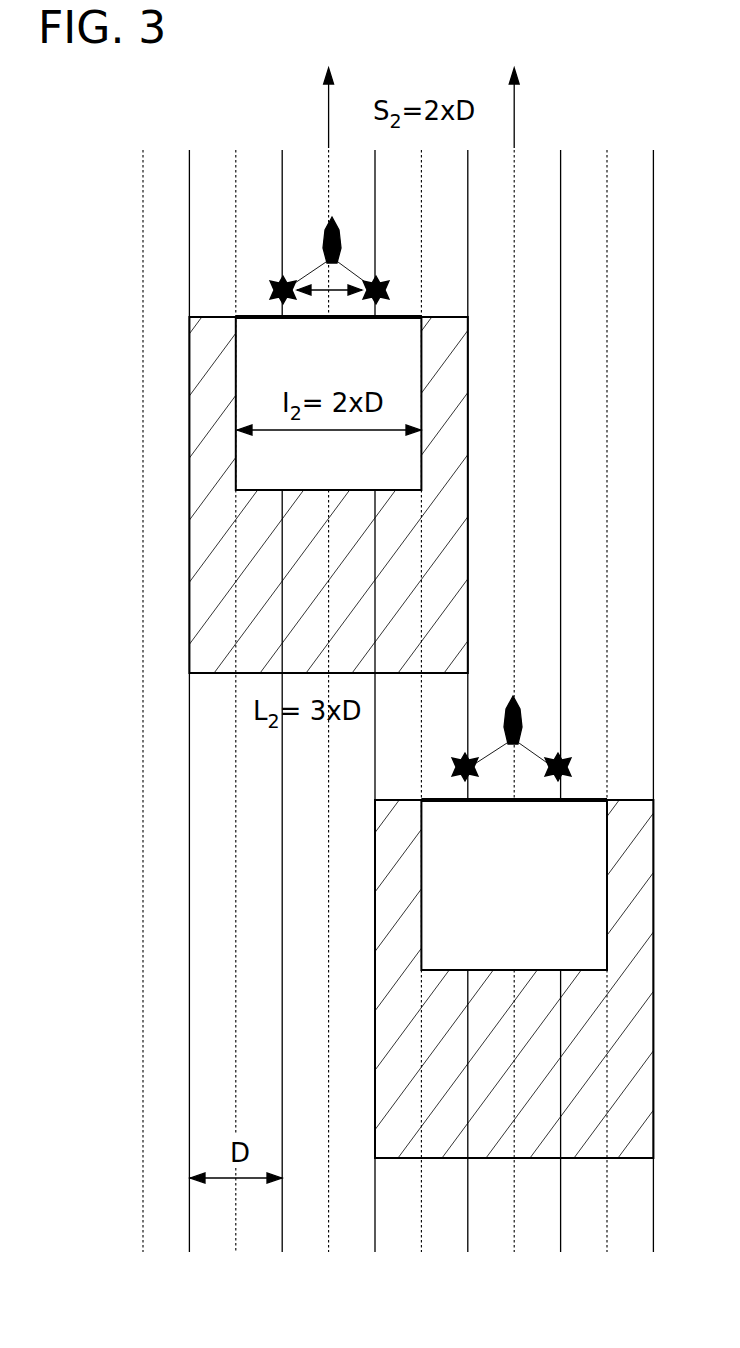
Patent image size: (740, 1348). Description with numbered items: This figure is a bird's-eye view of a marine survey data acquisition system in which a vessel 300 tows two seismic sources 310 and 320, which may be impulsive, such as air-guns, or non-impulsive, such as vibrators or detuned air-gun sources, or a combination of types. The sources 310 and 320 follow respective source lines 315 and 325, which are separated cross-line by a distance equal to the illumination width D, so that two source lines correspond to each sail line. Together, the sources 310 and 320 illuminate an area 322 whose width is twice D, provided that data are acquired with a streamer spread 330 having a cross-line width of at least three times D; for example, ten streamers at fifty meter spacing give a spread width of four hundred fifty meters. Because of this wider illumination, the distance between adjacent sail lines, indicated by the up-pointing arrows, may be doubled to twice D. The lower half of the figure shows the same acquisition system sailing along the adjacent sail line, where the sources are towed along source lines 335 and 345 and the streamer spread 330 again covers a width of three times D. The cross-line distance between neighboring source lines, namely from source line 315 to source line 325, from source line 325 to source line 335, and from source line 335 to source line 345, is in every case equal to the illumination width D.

The vessel 300 is at (341, 226).
The source 310 is at (279, 283).
The source 320 is at (379, 283).
The illuminated area 322 is at (368, 352).
The source line 325 is at (375, 748).
The streamer spread 330 is at (243, 645).
The source line 315 is at (283, 775).
The source line 335 is at (467, 1240).
The source line 345 is at (560, 1240).